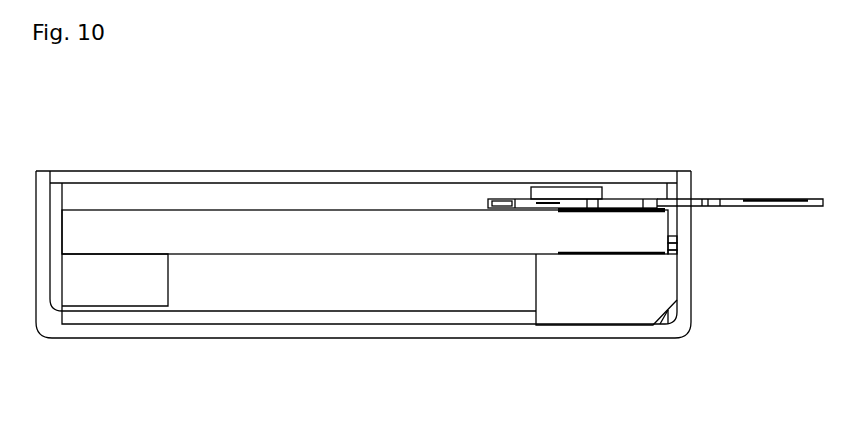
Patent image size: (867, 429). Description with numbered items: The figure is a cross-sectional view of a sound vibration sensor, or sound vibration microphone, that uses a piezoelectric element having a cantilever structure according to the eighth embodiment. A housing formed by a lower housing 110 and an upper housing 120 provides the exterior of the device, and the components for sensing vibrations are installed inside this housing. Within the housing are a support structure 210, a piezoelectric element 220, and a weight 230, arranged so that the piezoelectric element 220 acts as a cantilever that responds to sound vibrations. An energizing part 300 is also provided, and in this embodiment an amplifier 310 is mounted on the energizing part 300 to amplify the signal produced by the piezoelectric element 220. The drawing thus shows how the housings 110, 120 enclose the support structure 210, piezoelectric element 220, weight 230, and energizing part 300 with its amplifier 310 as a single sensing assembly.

The lower housing 110 is at (413, 332).
The upper housing 120 is at (458, 177).
The support structure 210 is at (608, 312).
The piezoelectric element 220 is at (300, 243).
The weight 230 is at (160, 284).
The energizing part 300 is at (753, 198).
The amplifier 310 is at (575, 192).